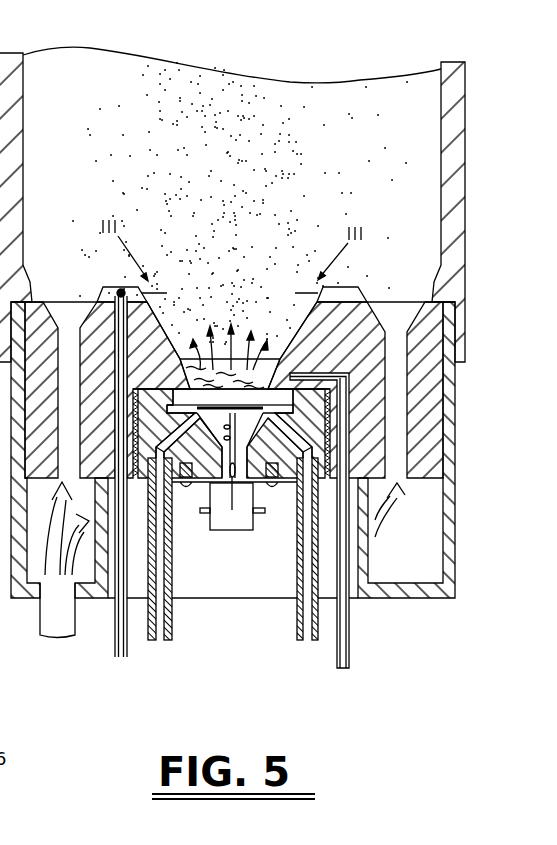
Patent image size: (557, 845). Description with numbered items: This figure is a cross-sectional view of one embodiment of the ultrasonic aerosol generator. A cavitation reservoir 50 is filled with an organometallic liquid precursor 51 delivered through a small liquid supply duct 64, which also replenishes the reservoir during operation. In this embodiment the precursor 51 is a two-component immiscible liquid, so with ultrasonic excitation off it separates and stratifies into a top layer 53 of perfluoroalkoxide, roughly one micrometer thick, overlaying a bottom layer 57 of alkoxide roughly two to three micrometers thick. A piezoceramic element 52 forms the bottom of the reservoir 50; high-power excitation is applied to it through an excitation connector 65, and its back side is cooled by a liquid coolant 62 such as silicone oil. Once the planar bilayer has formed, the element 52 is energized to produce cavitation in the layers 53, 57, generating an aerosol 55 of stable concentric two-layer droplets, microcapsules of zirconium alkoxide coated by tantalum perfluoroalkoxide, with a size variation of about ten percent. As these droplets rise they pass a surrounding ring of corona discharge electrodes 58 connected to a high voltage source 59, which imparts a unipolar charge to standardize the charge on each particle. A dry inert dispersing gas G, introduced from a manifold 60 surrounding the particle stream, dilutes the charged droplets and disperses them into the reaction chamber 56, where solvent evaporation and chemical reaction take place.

The cavitation reservoir 50 is at (305, 320).
The organometallic liquid precursor 51 is at (344, 682).
The piezoceramic element 52 is at (228, 398).
The top layer 53 is at (207, 370).
The aerosol 55 is at (241, 100).
The reaction chamber 56 is at (425, 188).
The bottom layer 57 is at (248, 366).
The corona discharge electrodes 58 is at (130, 286).
The high voltage source 59 is at (122, 676).
The manifold 60 is at (437, 396).
The liquid coolant 62 is at (161, 645).
The liquid supply duct 64 is at (350, 632).
The excitation connector 65 is at (247, 538).
The dispersing gas G is at (58, 650).